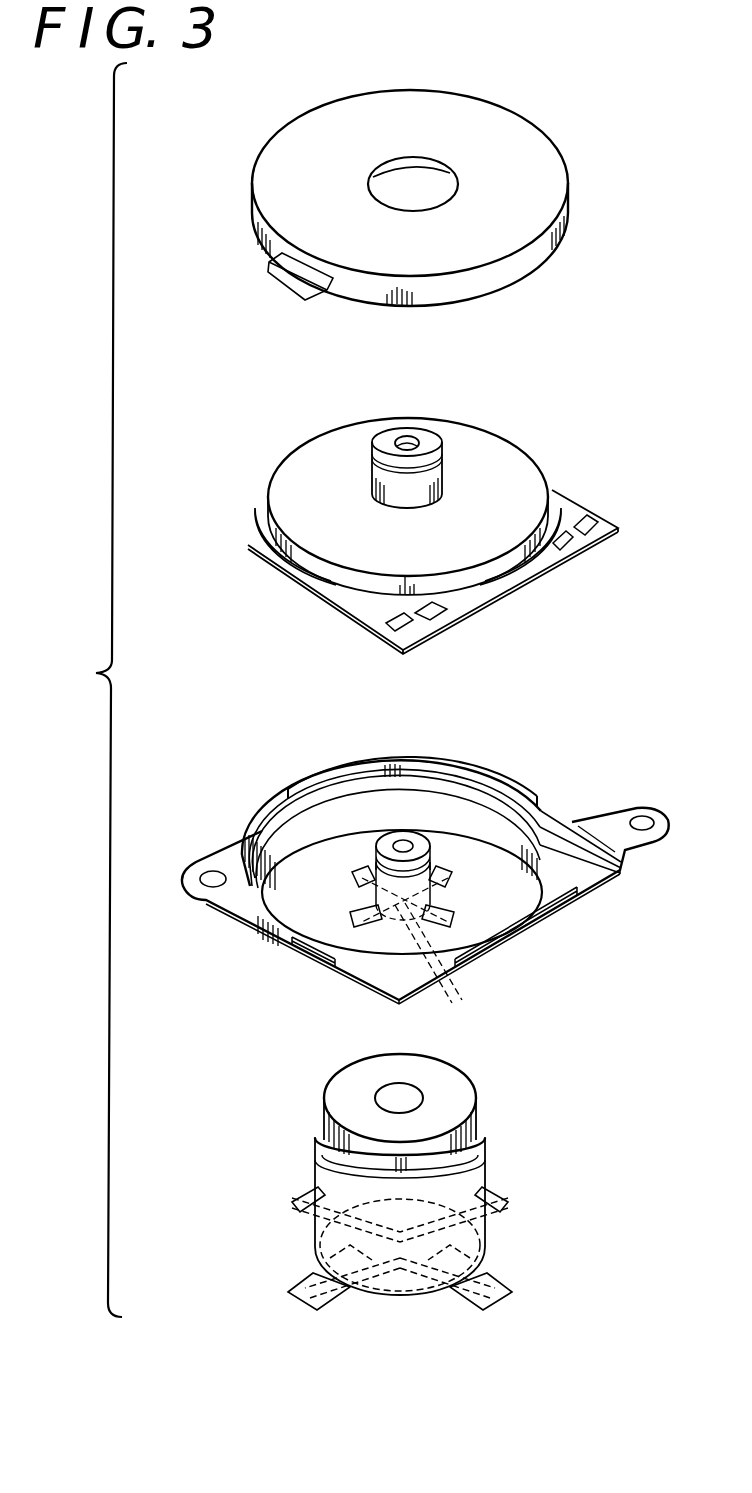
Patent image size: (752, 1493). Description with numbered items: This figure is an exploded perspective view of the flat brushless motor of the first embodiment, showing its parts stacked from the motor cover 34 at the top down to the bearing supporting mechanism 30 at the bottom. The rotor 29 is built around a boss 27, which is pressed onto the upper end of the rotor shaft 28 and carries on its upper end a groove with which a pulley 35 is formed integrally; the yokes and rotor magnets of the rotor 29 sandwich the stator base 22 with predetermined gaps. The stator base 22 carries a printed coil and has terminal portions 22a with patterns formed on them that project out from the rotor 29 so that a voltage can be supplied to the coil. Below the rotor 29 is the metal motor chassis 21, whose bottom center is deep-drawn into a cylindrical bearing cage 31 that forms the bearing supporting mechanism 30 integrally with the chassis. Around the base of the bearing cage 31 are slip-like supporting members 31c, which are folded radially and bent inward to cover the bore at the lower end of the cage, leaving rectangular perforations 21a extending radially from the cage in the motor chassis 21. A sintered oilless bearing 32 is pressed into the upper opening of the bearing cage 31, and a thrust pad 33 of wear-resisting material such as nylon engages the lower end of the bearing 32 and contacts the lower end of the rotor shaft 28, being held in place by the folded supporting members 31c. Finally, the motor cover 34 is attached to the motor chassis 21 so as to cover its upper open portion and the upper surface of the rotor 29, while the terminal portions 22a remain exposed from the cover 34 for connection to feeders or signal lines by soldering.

The motor chassis 21 is at (372, 760).
The rectangular perforations 21a is at (402, 1248).
The stator base 22 is at (465, 591).
The terminal portions 22a is at (417, 642).
The boss 27 is at (443, 482).
The rotor shaft 28 is at (408, 438).
The rotor 29 is at (250, 486).
The bearing supporting mechanism 30 is at (389, 1015).
The bearing cage 31 is at (452, 898).
The slip-like supporting members 31c is at (290, 1228).
The sintered oilless bearing 32 is at (416, 832).
The thrust pad 33 is at (452, 924).
The motor cover 34 is at (498, 129).
The pulley 35 is at (370, 468).